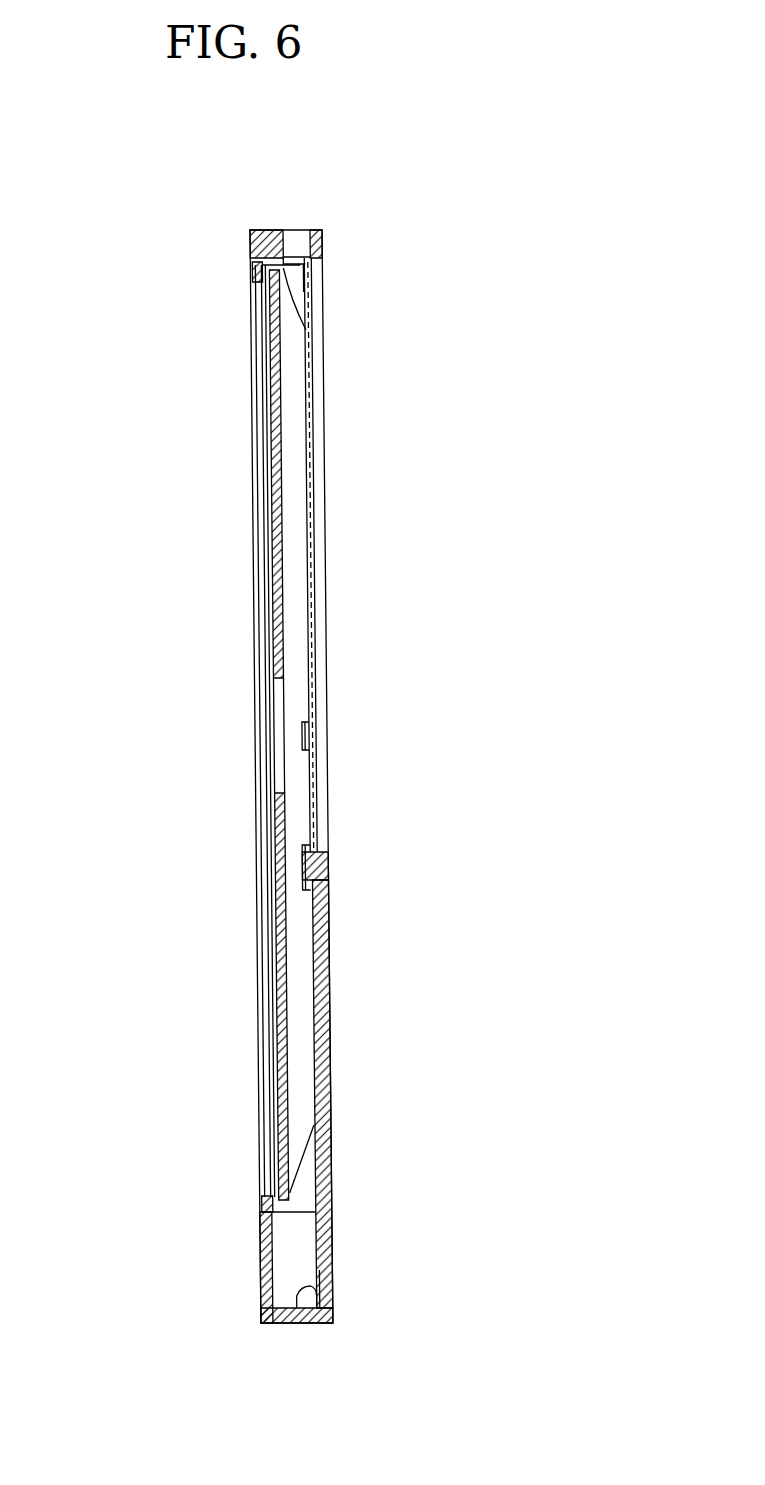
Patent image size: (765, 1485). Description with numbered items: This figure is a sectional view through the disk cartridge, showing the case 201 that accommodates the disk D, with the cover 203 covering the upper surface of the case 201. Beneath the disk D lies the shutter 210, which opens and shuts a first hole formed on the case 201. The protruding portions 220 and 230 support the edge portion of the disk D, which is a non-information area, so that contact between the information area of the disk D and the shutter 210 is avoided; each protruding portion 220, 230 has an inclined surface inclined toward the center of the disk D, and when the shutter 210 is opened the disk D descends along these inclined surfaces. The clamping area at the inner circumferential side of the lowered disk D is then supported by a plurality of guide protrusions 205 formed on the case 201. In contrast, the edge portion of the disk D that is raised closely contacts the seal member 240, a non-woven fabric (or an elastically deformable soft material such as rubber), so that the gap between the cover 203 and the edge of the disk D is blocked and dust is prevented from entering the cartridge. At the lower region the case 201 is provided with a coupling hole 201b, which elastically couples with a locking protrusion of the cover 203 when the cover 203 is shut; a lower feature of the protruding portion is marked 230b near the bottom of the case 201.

The case 201 is at (332, 996).
The coupling hole 201b is at (335, 1284).
The cover 203 is at (270, 230).
The guide protrusions 205 is at (300, 737).
The shutter 210 is at (312, 418).
The protruding portion 220 is at (293, 291).
The protruding portion 230 is at (304, 1178).
The lower portion of guide member 230b is at (298, 1310).
The seal member 240 is at (250, 262).
The disk D is at (273, 586).